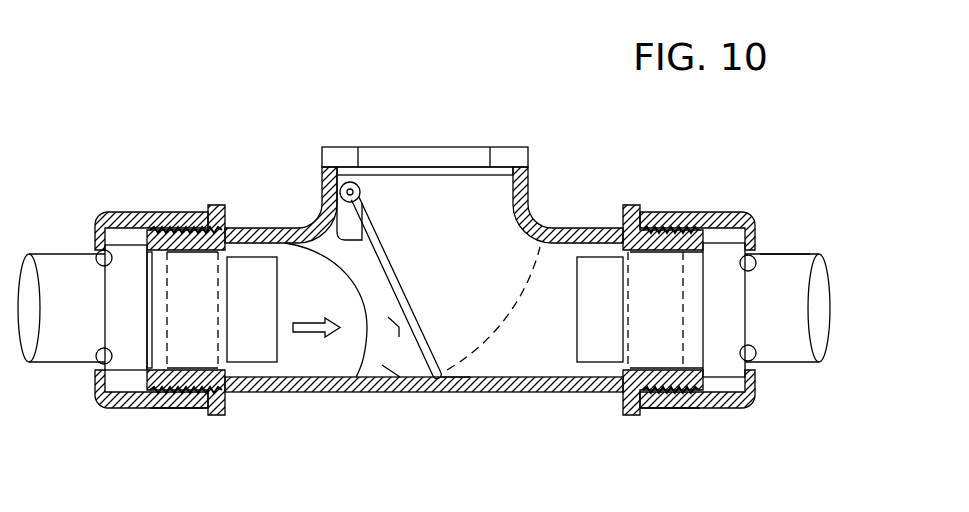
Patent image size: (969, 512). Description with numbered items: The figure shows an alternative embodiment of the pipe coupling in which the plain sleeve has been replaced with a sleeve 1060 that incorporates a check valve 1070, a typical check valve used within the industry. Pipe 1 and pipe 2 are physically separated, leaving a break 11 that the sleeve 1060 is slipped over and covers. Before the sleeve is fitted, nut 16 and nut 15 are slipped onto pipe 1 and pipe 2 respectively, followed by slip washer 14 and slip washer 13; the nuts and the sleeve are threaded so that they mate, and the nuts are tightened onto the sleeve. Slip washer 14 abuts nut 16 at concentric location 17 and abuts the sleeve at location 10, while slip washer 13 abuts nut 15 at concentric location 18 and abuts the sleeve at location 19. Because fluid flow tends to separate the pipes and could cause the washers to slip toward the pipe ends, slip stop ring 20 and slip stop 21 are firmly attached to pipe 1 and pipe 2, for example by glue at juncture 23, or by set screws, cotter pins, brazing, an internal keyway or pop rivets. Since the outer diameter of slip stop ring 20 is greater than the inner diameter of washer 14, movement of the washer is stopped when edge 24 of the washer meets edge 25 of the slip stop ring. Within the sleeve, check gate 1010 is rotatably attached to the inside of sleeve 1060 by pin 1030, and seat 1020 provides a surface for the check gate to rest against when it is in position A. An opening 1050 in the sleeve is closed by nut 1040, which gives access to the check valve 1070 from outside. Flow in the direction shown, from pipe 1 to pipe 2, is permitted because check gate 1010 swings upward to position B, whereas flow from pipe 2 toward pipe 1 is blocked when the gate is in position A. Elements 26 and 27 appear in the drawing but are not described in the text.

The pipe 1 is at (40, 363).
The pipe 2 is at (807, 363).
The location 10 is at (712, 222).
The break 11 is at (297, 295).
The slip washer 13 is at (750, 352).
The slip washer 14 is at (95, 350).
The nut 15 is at (667, 407).
The nut 16 is at (182, 407).
The concentric location 17 is at (100, 268).
The concentric location 18 is at (757, 263).
The location 19 is at (150, 258).
The slip stop ring 20 is at (220, 300).
The slip stop 21 is at (632, 250).
The juncture 23 is at (266, 378).
The edge of washer 24 is at (197, 310).
The edge of slip stop ring 25 is at (150, 345).
The outlet sleeve 26 is at (700, 340).
The outlet ferrule 27 is at (653, 313).
The check gate 1010 is at (460, 390).
The seat 1020 is at (383, 365).
The pin 1030 is at (337, 192).
The nut 1040 is at (388, 147).
The opening 1050 is at (527, 193).
The sleeve 1060 is at (327, 393).
The check valve 1070 is at (324, 118).